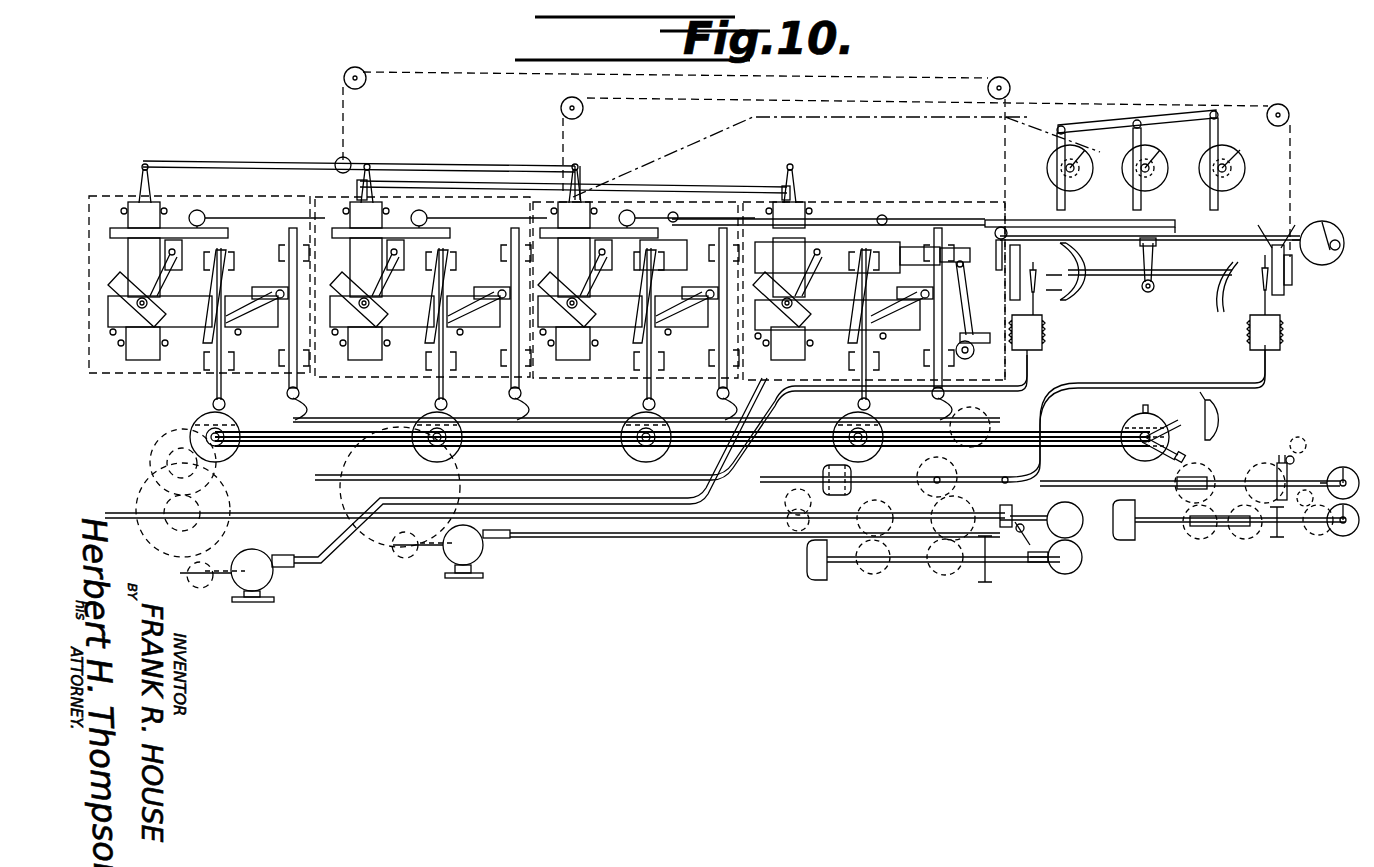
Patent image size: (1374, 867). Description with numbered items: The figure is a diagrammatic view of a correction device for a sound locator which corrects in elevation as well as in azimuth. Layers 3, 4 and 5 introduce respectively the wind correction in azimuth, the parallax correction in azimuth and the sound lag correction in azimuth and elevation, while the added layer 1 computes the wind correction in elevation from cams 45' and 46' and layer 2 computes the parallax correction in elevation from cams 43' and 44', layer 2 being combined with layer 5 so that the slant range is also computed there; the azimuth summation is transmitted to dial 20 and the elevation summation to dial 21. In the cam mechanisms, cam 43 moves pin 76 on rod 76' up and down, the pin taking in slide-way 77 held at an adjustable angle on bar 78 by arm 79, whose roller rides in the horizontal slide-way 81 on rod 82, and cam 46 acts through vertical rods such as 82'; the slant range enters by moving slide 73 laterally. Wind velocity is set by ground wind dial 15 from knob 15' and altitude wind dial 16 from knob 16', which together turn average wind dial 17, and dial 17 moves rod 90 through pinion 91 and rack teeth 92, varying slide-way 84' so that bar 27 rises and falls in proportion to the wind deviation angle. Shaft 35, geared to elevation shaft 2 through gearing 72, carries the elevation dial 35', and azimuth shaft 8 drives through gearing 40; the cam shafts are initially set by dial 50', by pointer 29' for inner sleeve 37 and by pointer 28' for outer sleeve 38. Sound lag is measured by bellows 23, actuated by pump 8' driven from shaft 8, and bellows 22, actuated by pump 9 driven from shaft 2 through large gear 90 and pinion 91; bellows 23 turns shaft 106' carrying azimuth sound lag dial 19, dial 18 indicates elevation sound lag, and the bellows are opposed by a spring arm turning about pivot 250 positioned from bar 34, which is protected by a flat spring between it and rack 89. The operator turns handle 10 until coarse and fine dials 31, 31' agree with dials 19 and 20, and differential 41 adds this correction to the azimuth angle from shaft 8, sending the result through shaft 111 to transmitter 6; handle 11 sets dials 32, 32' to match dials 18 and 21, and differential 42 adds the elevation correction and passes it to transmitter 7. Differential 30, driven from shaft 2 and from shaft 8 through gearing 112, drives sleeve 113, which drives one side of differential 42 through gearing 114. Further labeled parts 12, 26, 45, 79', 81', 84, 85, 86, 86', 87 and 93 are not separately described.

The layer 1 is at (377, 394).
The elevation shaft 2 is at (492, 492).
The layer 3 is at (190, 212).
The layer 4 is at (662, 200).
The layer 5 is at (826, 196).
The transmitter 6 is at (807, 575).
The transmitter 7 is at (1125, 540).
The azimuth shaft 8 is at (555, 530).
The pump 8' is at (239, 580).
The pump 9 is at (484, 548).
The setting handle 10 is at (1012, 414).
The handle 11 is at (1293, 458).
The dial 12 is at (1326, 231).
The ground wind velocity dial 15 is at (1080, 173).
The knob 15' is at (1114, 137).
The altitude wind velocity dial 16 is at (1238, 165).
The knob 16' is at (1252, 150).
The average wind velocity dial 17 is at (1175, 190).
The sound lag indicator dial in elevation 18 is at (1274, 255).
The sound lag indicating azimuth dial 19 is at (1058, 270).
The dial 20 is at (1014, 267).
The dial 21 is at (1290, 242).
The elevation sound lag bellows 22 is at (1262, 302).
The azimuth sound lag bellows 23 is at (1035, 352).
The solenoid 26 is at (573, 299).
The bar 27 is at (140, 200).
The pointer 28' is at (1177, 442).
The pointer 29' is at (1174, 415).
The differential 30 is at (822, 475).
The coarse azimuth dial 31 is at (1055, 570).
The fine azimuth dial 31' is at (1041, 514).
The coarse elevation dial 32 is at (1331, 533).
The fine elevation dial 32' is at (1324, 471).
The bar 34 is at (979, 303).
The shaft 35 is at (661, 410).
The elevation dial 35' is at (1239, 416).
The inner sleeve 37 is at (656, 415).
The outer sleeve 38 is at (682, 462).
The gearing 40 is at (196, 493).
The differential 41 is at (960, 567).
The differential 42 is at (1233, 534).
The cam 43 is at (655, 424).
The cam 43' is at (840, 426).
The cam 44' is at (936, 419).
The wheel 45 is at (196, 427).
The cam 45' is at (448, 355).
The cam 46 is at (315, 401).
The cam 46' is at (532, 324).
The dial 50' is at (1136, 426).
The gearing 72 is at (937, 474).
The slide 73 is at (663, 254).
The pin 76 is at (627, 296).
The rod 76' is at (669, 366).
The slide-way 77 is at (638, 340).
The bar 78 is at (437, 315).
The arm 79 is at (685, 324).
The link 79' is at (255, 322).
The horizontal slide-way 81 is at (700, 286).
The block 81' is at (267, 275).
The rod 82 is at (687, 304).
The vertical rod 82' is at (292, 291).
The lever 84 is at (353, 289).
The slide-way 84' is at (126, 284).
The pin 85 is at (602, 250).
The link 86 is at (575, 283).
The link 86' is at (177, 268).
The rod 87 is at (385, 165).
The rack 89 is at (995, 230).
The large gear 90 is at (345, 470).
The pinion 91 is at (257, 207).
The rack teeth 92 is at (185, 236).
The bar 93 is at (1003, 226).
The shaft 106' is at (1065, 288).
The shaft 111 is at (856, 566).
The gearing 112 is at (783, 506).
The sleeve 113 is at (682, 447).
The gearing 114 is at (1190, 485).
The pivot 250 is at (1145, 286).